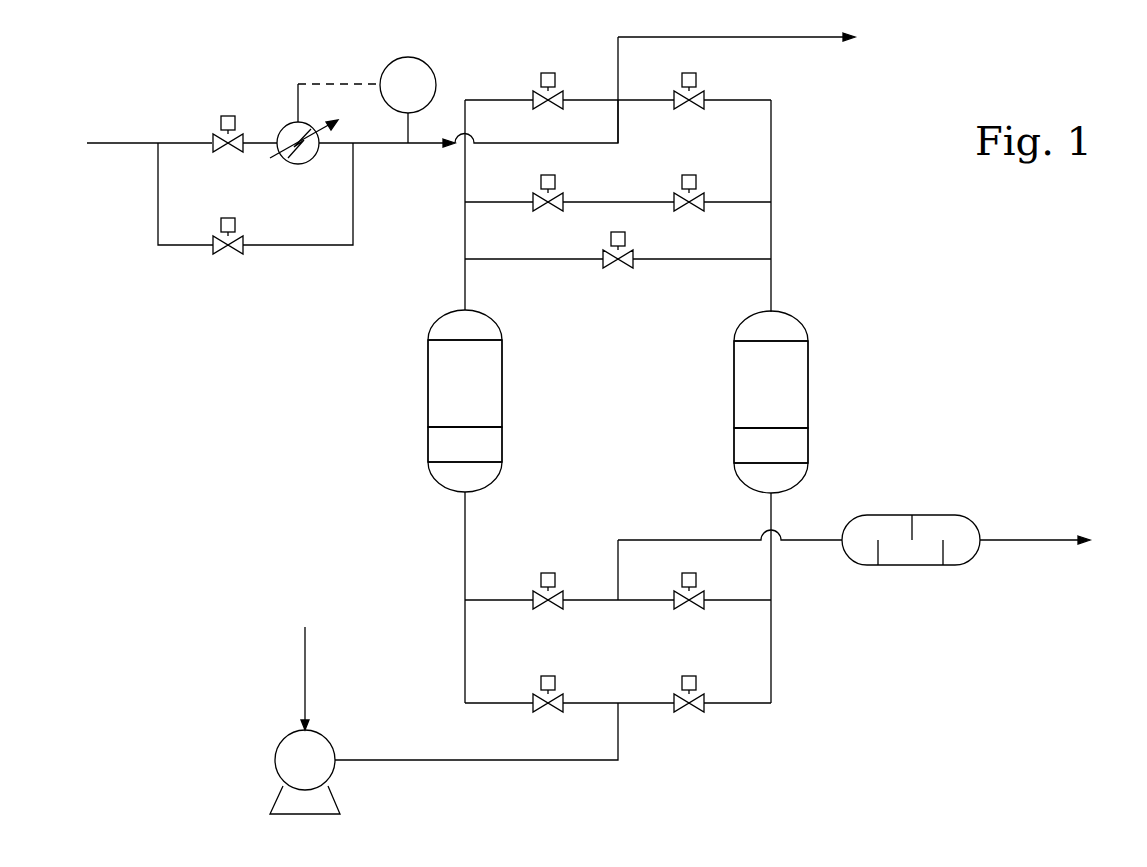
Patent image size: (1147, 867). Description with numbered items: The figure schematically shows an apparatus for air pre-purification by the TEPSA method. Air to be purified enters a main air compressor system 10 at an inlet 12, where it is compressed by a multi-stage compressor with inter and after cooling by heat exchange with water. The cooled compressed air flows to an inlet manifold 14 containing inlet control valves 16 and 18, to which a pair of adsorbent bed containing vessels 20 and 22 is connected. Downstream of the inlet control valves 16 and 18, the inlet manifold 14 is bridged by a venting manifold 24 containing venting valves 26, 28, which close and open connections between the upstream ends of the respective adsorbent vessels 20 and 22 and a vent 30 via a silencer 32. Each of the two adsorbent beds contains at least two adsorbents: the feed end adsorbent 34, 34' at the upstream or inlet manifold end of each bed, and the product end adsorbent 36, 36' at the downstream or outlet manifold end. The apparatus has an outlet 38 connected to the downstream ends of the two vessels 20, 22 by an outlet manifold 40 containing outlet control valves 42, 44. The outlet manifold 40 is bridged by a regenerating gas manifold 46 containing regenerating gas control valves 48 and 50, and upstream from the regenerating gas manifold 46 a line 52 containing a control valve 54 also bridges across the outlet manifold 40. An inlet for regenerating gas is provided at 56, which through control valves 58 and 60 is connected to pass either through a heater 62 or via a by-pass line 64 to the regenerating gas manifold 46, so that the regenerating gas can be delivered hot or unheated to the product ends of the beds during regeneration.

The main air compressor system 10 is at (283, 738).
The inlet 12 is at (305, 642).
The inlet manifold 14 is at (723, 705).
The inlet control valve 16 is at (537, 697).
The inlet control valve 18 is at (680, 697).
The adsorbent bed containing vessel 20 is at (505, 395).
The adsorbent bed containing vessel 22 is at (808, 390).
The venting manifold 24 is at (595, 602).
The venting valve 26 is at (537, 597).
The venting valve 28 is at (703, 597).
The vent 30 is at (1088, 538).
The silencer 32 is at (930, 515).
The feed end adsorbent 34 is at (491, 444).
The feed end adsorbent 34' is at (800, 445).
The product end adsorbent 36 is at (495, 381).
The product end adsorbent 36' is at (804, 381).
The outlet 38 is at (848, 37).
The outlet manifold 40 is at (727, 98).
The outlet control valve 42 is at (537, 97).
The outlet control valve 44 is at (677, 97).
The regenerating gas manifold 46 is at (520, 200).
The regenerating gas control valve 48 is at (563, 200).
The regenerating gas control valve 50 is at (703, 200).
The line 52 is at (682, 258).
The control valve 54 is at (605, 257).
The inlet for regenerating gas 56 is at (127, 143).
The control valve 58 is at (212, 140).
The control valve 60 is at (218, 240).
The heater 62 is at (301, 163).
The by-pass line 64 is at (353, 228).